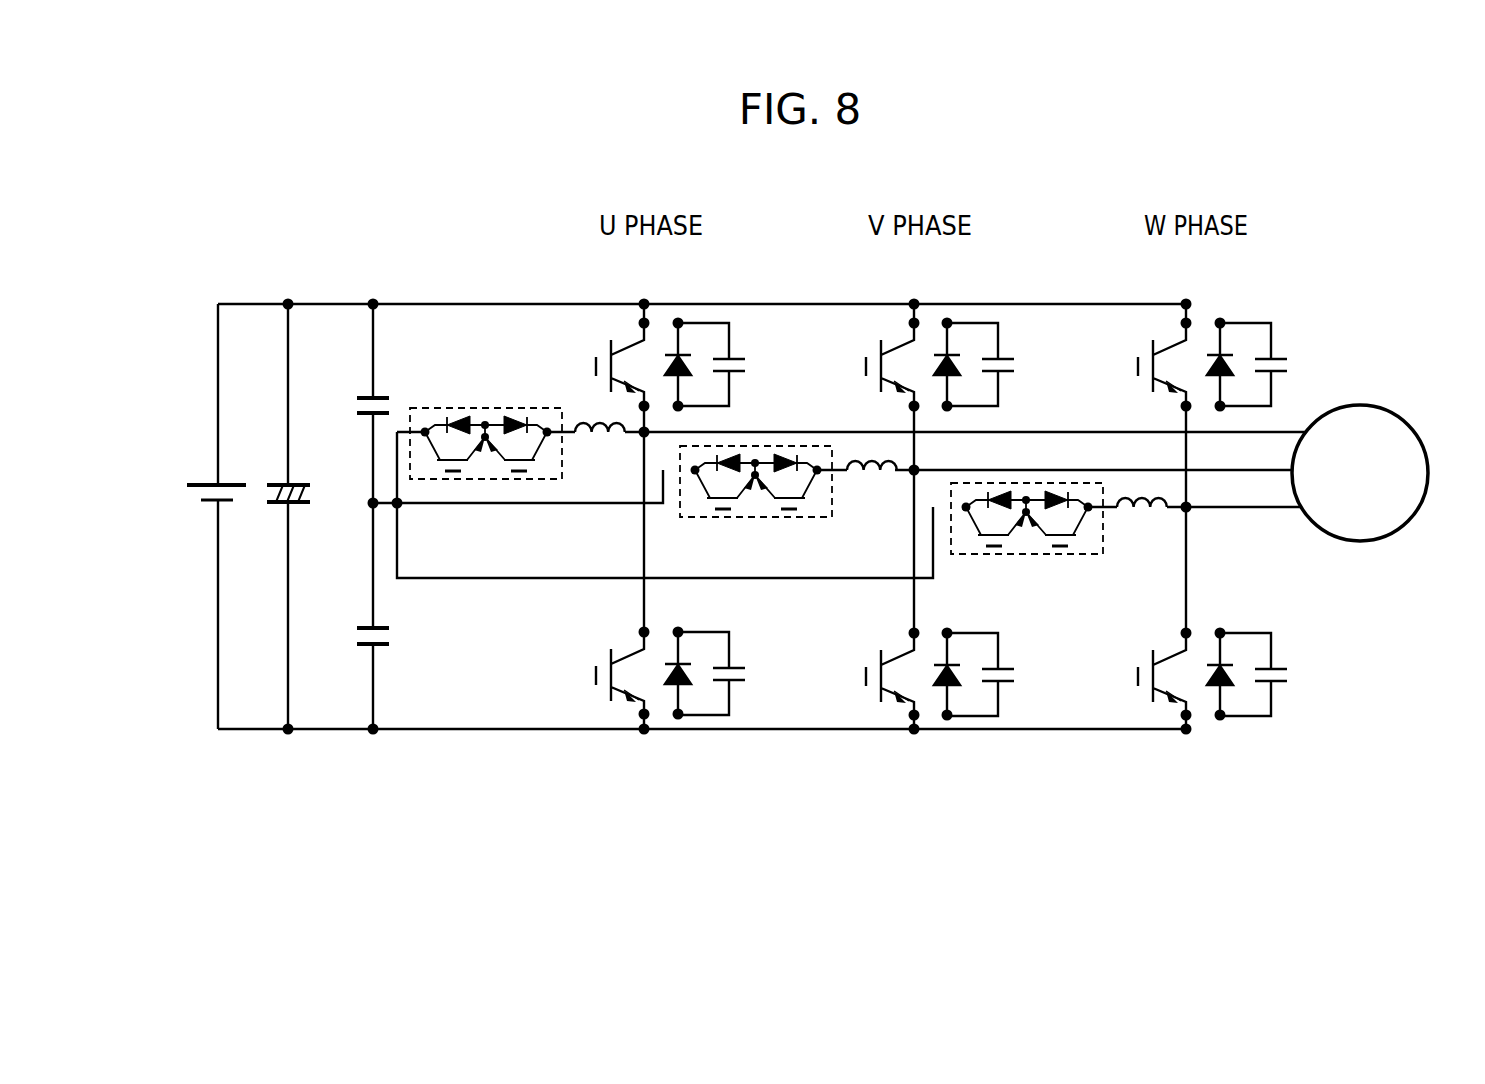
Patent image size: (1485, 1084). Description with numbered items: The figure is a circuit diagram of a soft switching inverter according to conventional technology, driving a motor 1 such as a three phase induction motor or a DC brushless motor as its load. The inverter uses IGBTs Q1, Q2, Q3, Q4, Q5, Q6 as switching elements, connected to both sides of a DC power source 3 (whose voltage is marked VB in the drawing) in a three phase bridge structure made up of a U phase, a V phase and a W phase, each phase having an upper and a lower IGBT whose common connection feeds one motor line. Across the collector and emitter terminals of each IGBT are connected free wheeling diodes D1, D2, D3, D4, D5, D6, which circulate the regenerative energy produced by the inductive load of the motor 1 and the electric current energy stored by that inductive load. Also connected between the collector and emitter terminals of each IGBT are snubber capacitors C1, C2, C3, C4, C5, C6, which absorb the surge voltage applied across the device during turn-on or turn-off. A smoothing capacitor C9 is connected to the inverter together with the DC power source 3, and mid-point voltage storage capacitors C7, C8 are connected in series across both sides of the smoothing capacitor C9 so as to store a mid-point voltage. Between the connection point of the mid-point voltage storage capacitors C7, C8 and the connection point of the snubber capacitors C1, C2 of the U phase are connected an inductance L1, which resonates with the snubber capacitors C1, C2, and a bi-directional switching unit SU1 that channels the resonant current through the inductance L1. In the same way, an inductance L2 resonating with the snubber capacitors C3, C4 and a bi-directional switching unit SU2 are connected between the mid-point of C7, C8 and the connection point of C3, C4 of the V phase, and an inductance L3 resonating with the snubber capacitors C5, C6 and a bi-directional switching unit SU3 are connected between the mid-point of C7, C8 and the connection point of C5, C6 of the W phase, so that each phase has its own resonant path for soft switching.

The motor 1 is at (1397, 531).
The DC power source 3 is at (205, 483).
The battery voltage VB is at (185, 521).
The snubber capacitor C1 is at (740, 357).
The snubber capacitor C2 is at (734, 684).
The snubber capacitor C3 is at (1010, 357).
The snubber capacitor C4 is at (1005, 685).
The snubber capacitor C5 is at (1282, 357).
The snubber capacitor C6 is at (1277, 685).
The mid-point voltage storage capacitor C7 is at (366, 397).
The mid-point voltage storage capacitor C8 is at (366, 627).
The smoothing capacitor C9 is at (283, 506).
The free wheeling diode D1 is at (684, 350).
The free wheeling diode D2 is at (684, 690).
The free wheeling diode D3 is at (953, 350).
The free wheeling diode D4 is at (953, 691).
The free wheeling diode D5 is at (1225, 350).
The free wheeling diode D6 is at (1225, 691).
The IGBT Q1 is at (626, 340).
The IGBT Q2 is at (622, 698).
The IGBT Q3 is at (896, 340).
The IGBT Q4 is at (893, 699).
The IGBT Q5 is at (1166, 340).
The IGBT Q6 is at (1164, 699).
The inductance L1 is at (602, 440).
The inductance L2 is at (872, 478).
The inductance L3 is at (1142, 515).
The bi-directional switching unit SU1 is at (504, 408).
The bi-directional switching unit SU2 is at (766, 446).
The bi-directional switching unit SU3 is at (1035, 483).